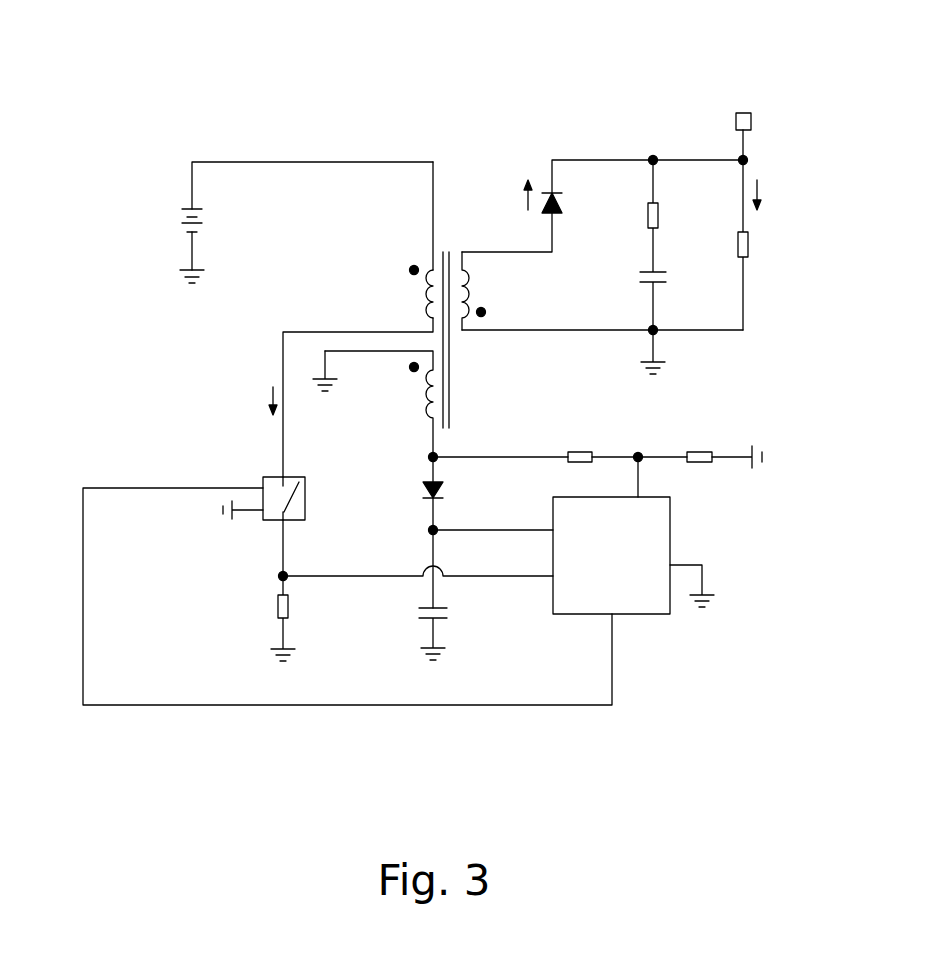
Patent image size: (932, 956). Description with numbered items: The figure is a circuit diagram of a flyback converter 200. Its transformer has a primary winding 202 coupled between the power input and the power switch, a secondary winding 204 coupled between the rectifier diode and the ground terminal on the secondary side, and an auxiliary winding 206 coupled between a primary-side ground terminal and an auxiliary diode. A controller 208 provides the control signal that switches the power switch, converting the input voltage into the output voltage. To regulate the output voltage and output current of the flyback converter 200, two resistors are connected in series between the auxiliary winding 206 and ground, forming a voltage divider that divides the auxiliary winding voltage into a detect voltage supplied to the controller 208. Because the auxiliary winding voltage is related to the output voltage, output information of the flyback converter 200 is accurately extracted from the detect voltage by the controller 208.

The flyback converter 200 is at (491, 371).
The primary winding 202 is at (401, 267).
The secondary winding 204 is at (477, 272).
The auxiliary winding 206 is at (417, 408).
The controller 208 is at (670, 532).